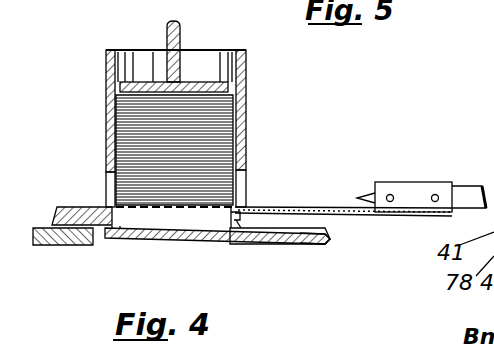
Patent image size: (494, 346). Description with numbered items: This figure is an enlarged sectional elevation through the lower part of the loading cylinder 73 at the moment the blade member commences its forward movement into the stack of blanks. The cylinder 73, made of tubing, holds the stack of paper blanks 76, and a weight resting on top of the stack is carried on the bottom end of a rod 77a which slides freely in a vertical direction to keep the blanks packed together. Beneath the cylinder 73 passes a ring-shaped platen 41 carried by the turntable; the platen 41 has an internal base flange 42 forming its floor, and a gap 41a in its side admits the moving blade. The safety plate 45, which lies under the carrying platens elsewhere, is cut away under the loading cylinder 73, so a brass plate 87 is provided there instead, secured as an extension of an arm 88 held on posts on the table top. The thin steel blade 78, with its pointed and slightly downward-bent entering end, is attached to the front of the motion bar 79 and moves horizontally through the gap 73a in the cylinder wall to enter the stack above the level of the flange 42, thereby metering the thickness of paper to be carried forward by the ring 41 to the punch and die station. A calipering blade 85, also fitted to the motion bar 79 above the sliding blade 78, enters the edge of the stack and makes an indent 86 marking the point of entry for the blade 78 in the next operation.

The ring-shaped platen 41 is at (103, 207).
The gap in platen side 41a is at (240, 222).
The internal base flange 42 is at (116, 232).
The safety plate 45 is at (47, 246).
The loading cylinder 73 is at (247, 80).
The gap in cylinder wall 73a is at (239, 190).
The paper blanks 76 is at (235, 100).
The rod 77a is at (181, 28).
The thin blade 78 is at (324, 207).
The motion bar 79 is at (465, 185).
The calipering blade 85 is at (360, 193).
The indent 86 is at (242, 206).
The brass plate 87 is at (195, 240).
The arm 88 is at (312, 244).